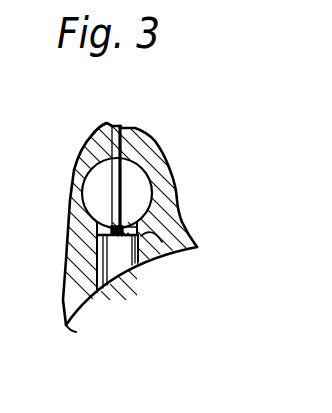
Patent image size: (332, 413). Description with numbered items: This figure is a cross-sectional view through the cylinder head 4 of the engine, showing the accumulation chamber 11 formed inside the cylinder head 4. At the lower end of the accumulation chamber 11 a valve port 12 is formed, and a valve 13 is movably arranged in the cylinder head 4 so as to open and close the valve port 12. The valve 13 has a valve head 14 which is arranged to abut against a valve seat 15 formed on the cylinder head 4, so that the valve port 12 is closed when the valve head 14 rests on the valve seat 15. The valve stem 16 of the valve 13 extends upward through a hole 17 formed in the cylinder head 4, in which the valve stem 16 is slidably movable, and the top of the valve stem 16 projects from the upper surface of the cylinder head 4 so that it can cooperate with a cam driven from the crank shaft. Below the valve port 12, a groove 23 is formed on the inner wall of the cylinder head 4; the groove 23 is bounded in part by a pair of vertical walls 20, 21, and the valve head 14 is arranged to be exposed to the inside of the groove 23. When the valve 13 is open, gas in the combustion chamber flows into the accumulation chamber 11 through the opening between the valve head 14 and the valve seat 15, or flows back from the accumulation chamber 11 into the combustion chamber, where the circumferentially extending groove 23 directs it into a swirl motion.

The cylinder head 4 is at (88, 157).
The accumulation chamber 11 is at (135, 186).
The valve port 12 is at (135, 226).
The valve 13 is at (128, 172).
The valve head 14 is at (113, 257).
The valve seat 15 is at (160, 246).
The valve stem 16 is at (130, 137).
The hole 17 is at (100, 127).
The vertical wall 20 is at (95, 278).
The vertical wall 21 is at (133, 256).
The groove 23 is at (122, 237).